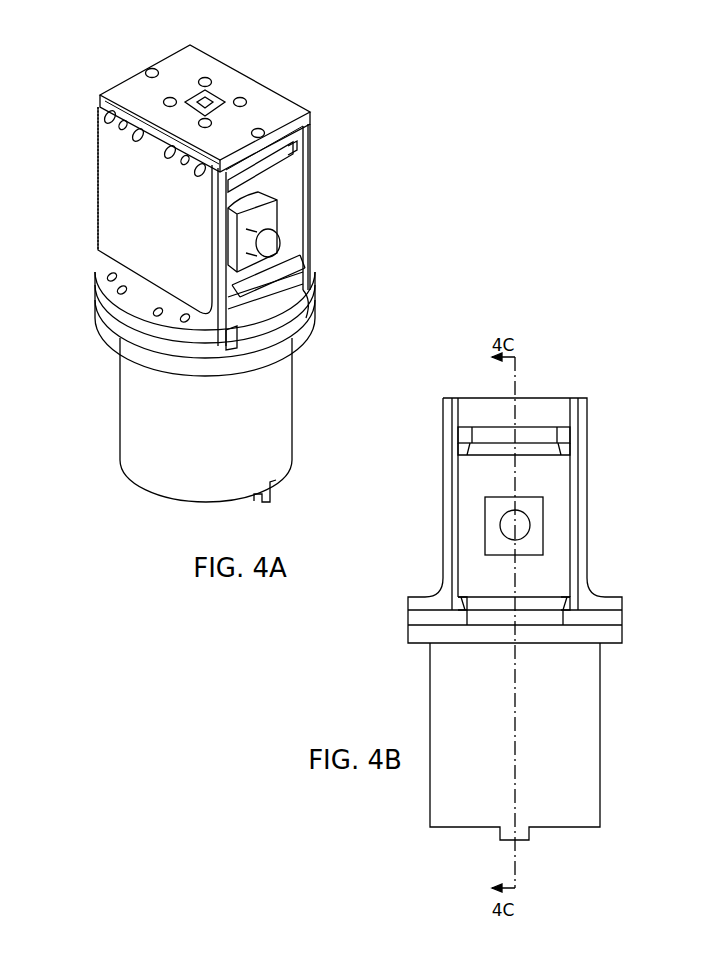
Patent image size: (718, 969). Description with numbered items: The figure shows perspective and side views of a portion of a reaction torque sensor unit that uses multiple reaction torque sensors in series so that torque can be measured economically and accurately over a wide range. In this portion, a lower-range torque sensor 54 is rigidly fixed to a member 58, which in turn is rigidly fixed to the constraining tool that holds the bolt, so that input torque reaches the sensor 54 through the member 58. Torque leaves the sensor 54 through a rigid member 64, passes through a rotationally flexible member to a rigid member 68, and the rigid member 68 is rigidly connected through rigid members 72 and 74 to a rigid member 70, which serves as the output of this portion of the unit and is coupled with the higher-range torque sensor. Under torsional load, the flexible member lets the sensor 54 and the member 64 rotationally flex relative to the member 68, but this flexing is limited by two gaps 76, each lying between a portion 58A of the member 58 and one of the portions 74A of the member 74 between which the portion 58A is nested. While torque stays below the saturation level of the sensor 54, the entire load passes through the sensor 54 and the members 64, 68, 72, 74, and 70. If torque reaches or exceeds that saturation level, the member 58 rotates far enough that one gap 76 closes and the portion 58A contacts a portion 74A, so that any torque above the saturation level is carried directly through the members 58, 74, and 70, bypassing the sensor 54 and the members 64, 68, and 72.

In FIG. 4A, the lower-range torque sensor 54 is at (278, 218).
In FIG. 4B, the lower-range torque sensor 54 is at (467, 487).
In FIG. 4A, the member 58 is at (272, 326).
In FIG. 4B, the member 58 is at (572, 610).
In FIG. 4A, the portion of member 58 58A is at (275, 307).
In FIG. 4B, the portion of member 58 58A is at (500, 620).
In FIG. 4A, the rigid member 64 is at (263, 177).
In FIG. 4B, the rigid member 64 is at (540, 437).
In FIG. 4A, the rigid member 68 is at (273, 108).
In FIG. 4A, the rigid member 70 is at (163, 475).
In FIG. 4B, the rigid member 70 is at (600, 794).
In FIG. 4A, the rigid member 72 is at (295, 255).
In FIG. 4B, the rigid member 72 is at (622, 603).
In FIG. 4A, the rigid member 74 is at (180, 343).
In FIG. 4B, the rigid member 74 is at (622, 617).
In FIG. 4B, the portions of member 74 74A is at (423, 618).
In FIG. 4A, the gaps 76 is at (310, 290).
In FIG. 4B, the gaps 76 is at (455, 620).